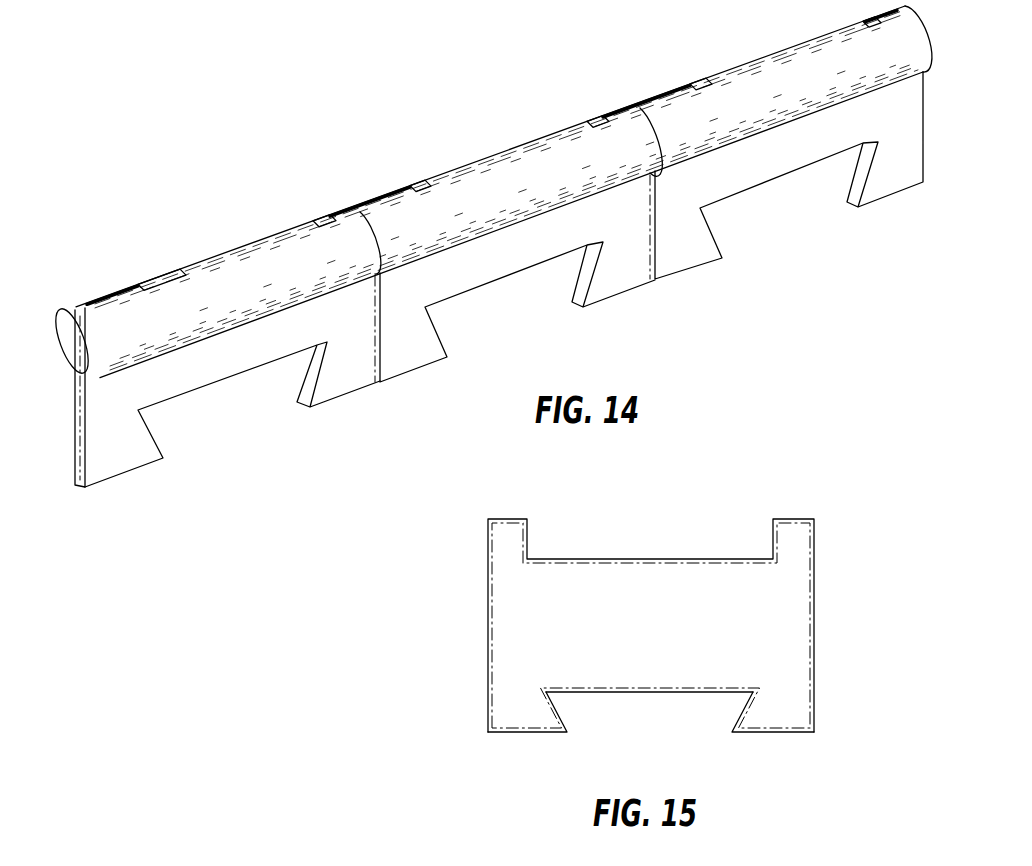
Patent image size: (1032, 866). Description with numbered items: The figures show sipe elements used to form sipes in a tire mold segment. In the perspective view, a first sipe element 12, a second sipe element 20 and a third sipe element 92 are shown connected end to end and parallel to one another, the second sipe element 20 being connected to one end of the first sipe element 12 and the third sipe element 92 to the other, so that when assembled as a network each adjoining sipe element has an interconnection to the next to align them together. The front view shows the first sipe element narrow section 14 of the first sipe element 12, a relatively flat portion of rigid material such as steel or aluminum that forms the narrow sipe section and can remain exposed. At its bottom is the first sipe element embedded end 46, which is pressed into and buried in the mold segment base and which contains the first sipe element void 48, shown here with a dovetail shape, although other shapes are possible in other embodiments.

In FIG. 14, the first sipe element 12 is at (483, 163).
In FIG. 15, the first sipe element 12 is at (833, 482).
In FIG. 14, the second sipe element 20 is at (758, 65).
In FIG. 14, the third sipe element 92 is at (183, 268).
In FIG. 15, the first sipe element narrow section 14 is at (505, 602).
In FIG. 15, the first sipe element embedded end 46 is at (775, 718).
In FIG. 15, the first sipe element void 48 is at (667, 723).